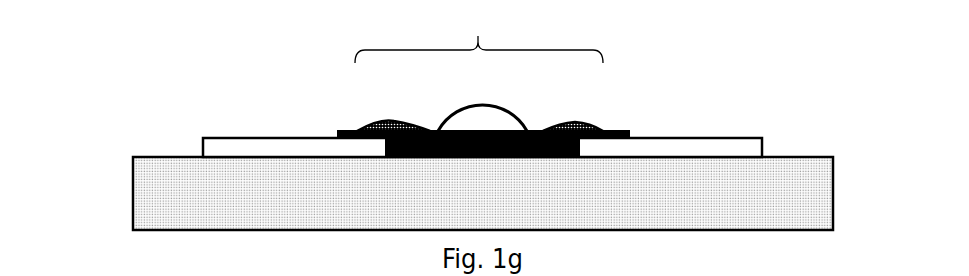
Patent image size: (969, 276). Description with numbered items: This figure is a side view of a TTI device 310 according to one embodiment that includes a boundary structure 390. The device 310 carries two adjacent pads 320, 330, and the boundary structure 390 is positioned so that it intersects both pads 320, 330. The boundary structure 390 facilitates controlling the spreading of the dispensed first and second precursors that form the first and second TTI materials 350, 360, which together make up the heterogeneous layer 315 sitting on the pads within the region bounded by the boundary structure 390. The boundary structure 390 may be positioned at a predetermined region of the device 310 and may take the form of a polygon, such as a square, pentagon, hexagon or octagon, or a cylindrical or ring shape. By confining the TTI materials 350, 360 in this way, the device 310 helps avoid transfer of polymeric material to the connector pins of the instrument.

The device 310 is at (165, 55).
The heterogeneous layer 315 is at (479, 35).
The pad 320 is at (216, 143).
The pad 330 is at (737, 142).
The first TTI material 350 is at (397, 123).
The second TTI material 360 is at (500, 118).
The boundary structure 390 is at (597, 125).